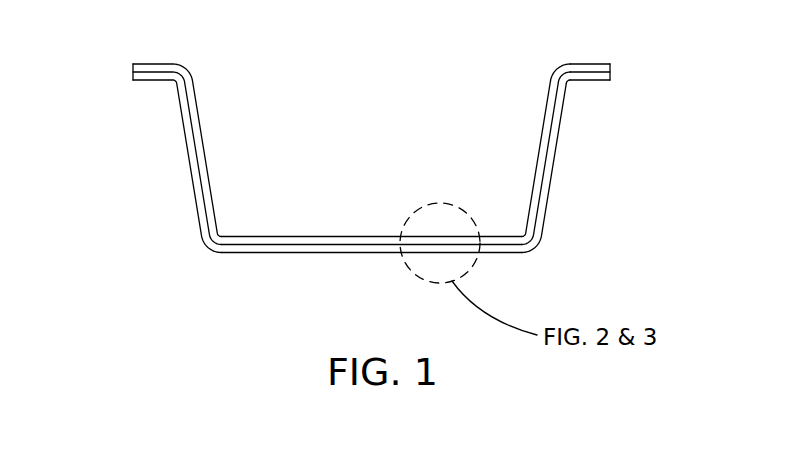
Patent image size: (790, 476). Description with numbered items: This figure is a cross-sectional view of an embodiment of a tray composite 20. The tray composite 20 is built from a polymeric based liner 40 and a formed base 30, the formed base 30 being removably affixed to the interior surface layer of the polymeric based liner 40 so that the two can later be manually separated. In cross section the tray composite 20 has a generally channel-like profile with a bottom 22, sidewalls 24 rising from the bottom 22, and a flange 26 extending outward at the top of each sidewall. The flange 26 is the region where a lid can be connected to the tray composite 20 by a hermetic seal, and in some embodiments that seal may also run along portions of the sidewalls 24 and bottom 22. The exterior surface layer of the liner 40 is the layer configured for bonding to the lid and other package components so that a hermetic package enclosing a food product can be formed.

The tray composite 20 is at (371, 175).
The bottom 22 is at (280, 237).
The sidewalls 24 is at (540, 140).
The flange 26 is at (593, 64).
The formed base 30 is at (323, 251).
The polymeric based liner 40 is at (553, 80).